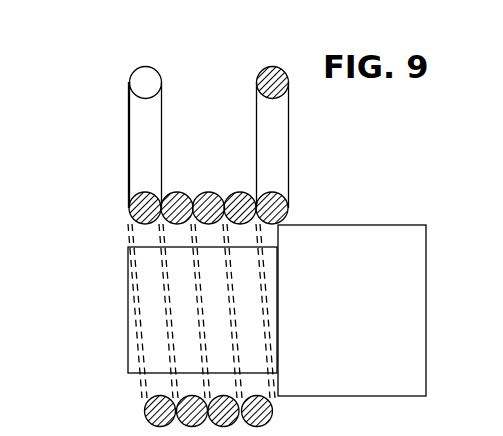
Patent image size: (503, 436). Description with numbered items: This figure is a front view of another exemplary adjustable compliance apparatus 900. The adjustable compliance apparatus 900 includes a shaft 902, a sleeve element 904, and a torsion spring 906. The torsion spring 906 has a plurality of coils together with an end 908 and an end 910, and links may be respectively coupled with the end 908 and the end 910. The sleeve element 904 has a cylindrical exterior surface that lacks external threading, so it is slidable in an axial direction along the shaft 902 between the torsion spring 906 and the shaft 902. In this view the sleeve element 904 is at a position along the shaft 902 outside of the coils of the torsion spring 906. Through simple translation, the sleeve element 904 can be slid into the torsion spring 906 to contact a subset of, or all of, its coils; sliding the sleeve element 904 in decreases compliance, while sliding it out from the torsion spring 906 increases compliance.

The adjustable compliance apparatus 900 is at (369, 166).
The shaft 902 is at (128, 332).
The sleeve element 904 is at (395, 225).
The torsion spring 906 is at (245, 195).
The end 908 is at (138, 67).
The end 910 is at (266, 66).